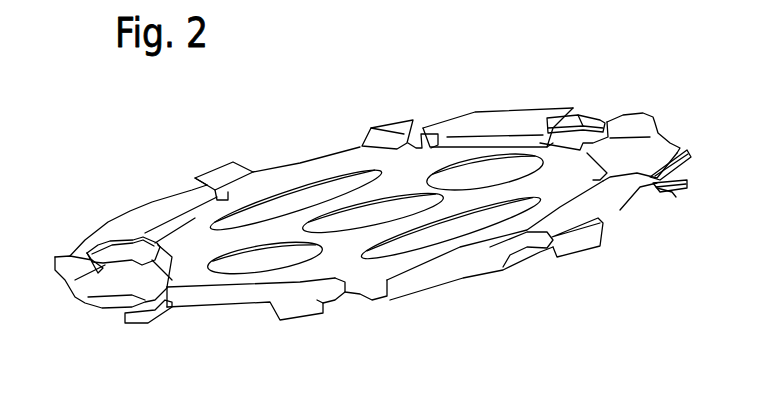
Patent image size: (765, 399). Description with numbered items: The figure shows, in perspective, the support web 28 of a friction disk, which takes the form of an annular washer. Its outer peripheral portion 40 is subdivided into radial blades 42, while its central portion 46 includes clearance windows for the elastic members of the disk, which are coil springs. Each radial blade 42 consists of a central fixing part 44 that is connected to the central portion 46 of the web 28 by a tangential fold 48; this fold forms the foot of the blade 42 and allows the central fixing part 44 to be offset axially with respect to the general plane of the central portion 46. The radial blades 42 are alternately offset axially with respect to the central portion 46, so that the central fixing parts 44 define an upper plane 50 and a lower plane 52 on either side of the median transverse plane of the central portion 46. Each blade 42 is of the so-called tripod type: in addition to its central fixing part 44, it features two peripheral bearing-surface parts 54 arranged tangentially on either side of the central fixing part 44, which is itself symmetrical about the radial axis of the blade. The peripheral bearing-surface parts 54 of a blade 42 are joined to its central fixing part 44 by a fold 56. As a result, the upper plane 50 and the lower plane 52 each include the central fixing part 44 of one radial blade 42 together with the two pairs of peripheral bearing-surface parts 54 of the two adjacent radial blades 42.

The support web 28 is at (265, 150).
The outer peripheral portion 40 is at (490, 89).
The radial blade 42 is at (525, 111).
The central fixing part 44 is at (667, 140).
The central portion 46 is at (339, 269).
The tangential fold 48 is at (580, 113).
The upper plane 50 is at (125, 233).
The lower plane 52 is at (78, 306).
The peripheral bearing-surface part 54 is at (690, 183).
The fold 56 is at (673, 192).